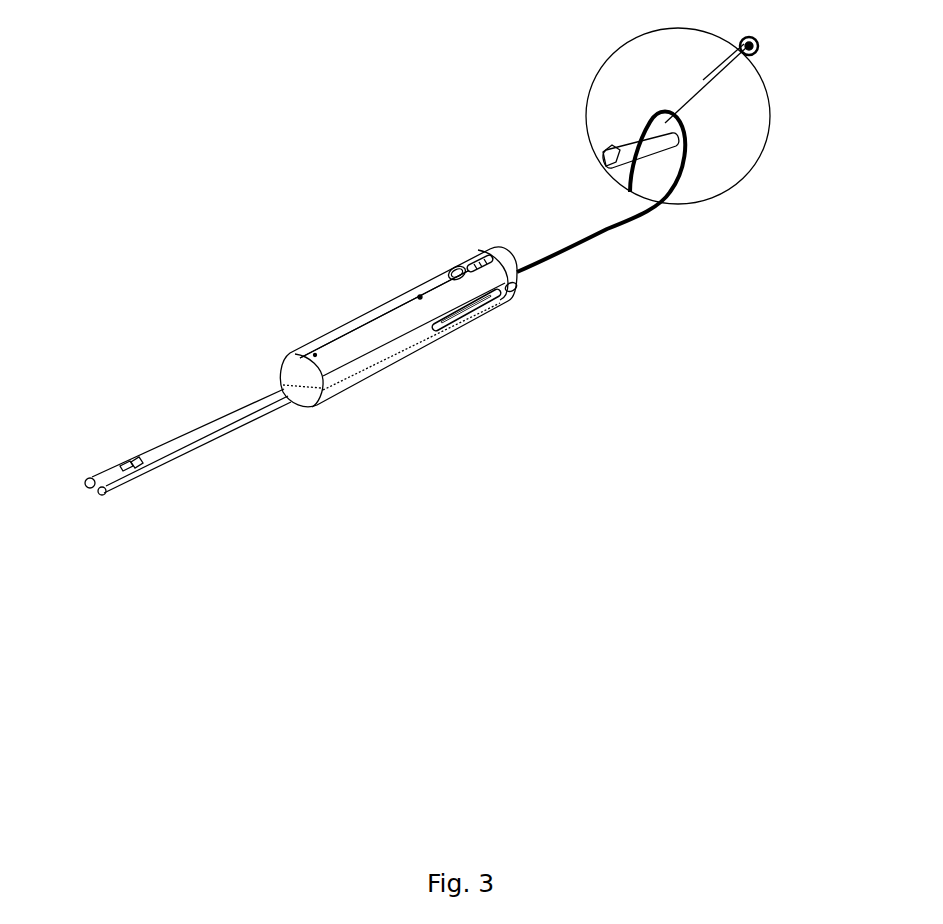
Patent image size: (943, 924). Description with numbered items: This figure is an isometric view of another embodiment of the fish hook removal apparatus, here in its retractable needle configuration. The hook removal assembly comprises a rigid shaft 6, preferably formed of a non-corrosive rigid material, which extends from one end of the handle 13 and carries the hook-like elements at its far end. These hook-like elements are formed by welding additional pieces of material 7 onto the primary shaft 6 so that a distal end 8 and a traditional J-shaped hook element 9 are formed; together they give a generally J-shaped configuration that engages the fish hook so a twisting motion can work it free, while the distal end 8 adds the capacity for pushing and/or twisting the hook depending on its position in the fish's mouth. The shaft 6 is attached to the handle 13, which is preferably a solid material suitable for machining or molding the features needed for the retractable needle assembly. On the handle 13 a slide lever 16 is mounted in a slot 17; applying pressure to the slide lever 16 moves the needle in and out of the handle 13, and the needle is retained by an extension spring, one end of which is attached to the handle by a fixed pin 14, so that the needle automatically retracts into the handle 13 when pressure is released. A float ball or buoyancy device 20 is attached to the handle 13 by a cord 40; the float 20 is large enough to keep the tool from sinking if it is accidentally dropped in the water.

The rigid shaft 6 is at (177, 450).
The additional pieces of material 7 is at (123, 463).
The distal end 8 is at (90, 481).
The J-shaped hook element 9 is at (133, 462).
The handle 13 is at (377, 320).
The fixed pin 14 is at (420, 297).
The slide lever 16 is at (452, 267).
The slot 17 is at (477, 255).
The float ball or buoyancy device 20 is at (718, 152).
The cord 40 is at (633, 227).